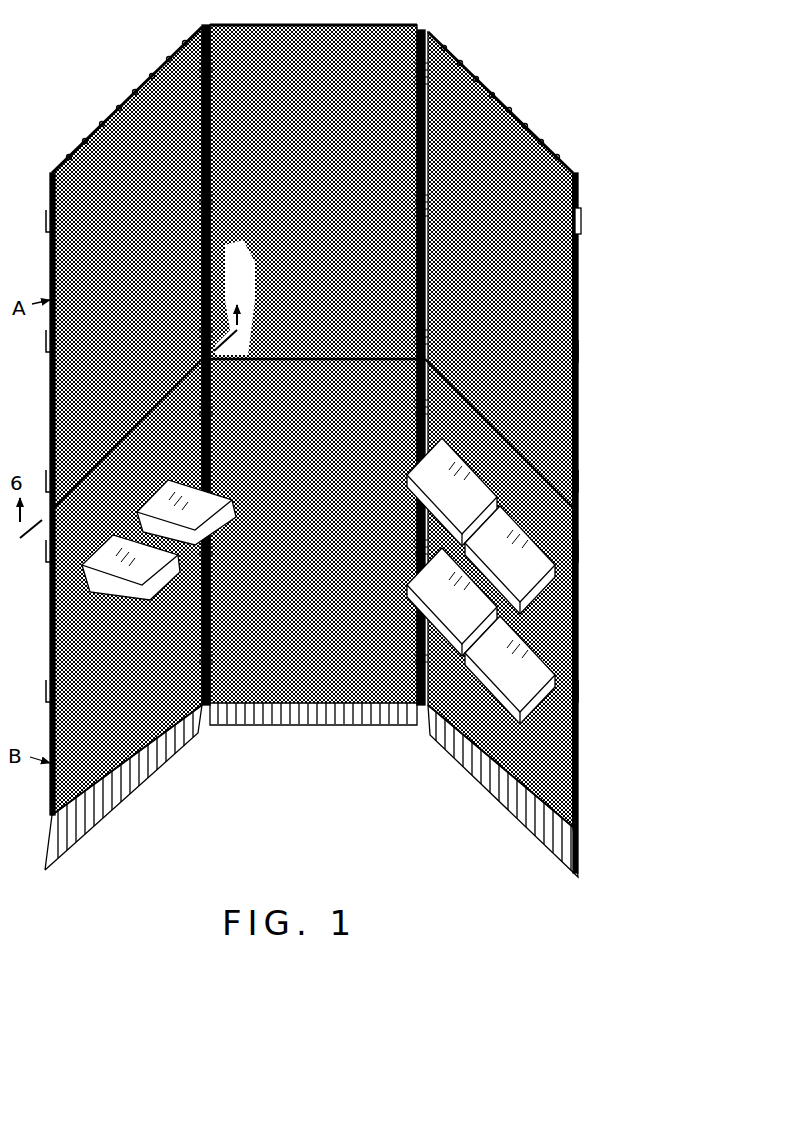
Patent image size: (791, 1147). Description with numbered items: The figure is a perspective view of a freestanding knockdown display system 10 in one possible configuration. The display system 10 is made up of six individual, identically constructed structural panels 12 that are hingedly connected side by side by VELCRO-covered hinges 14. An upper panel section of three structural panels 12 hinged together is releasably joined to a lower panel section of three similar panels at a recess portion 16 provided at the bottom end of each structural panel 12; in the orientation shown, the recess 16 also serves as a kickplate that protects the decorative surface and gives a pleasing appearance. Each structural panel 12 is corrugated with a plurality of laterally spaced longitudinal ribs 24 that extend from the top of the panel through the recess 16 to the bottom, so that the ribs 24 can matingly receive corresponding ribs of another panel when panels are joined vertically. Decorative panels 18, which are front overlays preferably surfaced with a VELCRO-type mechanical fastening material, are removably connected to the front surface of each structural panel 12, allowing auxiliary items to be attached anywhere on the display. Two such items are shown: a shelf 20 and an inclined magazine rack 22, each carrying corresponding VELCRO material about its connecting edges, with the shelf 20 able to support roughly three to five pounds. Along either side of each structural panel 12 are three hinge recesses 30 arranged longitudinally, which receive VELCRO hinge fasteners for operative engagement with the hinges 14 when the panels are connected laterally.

The freestanding knockdown display system 10 is at (538, 92).
The structural panel 12 is at (573, 175).
The hinge 14 is at (444, 44).
The recess portion 16 is at (578, 494).
The decorative panel 18 is at (577, 255).
The shelf 20 is at (90, 587).
The inclined magazine rack 22 is at (548, 580).
The longitudinal rib 24 is at (487, 86).
The hinge recess 30 is at (580, 208).